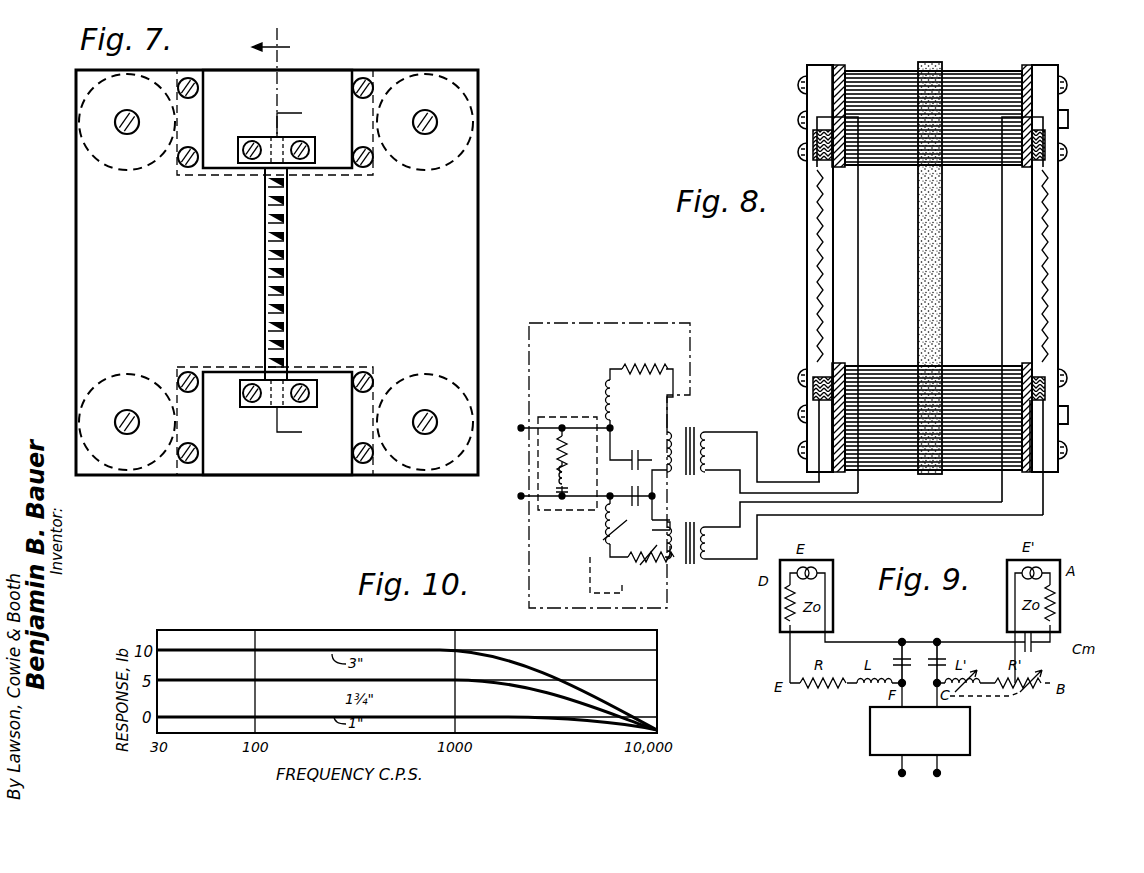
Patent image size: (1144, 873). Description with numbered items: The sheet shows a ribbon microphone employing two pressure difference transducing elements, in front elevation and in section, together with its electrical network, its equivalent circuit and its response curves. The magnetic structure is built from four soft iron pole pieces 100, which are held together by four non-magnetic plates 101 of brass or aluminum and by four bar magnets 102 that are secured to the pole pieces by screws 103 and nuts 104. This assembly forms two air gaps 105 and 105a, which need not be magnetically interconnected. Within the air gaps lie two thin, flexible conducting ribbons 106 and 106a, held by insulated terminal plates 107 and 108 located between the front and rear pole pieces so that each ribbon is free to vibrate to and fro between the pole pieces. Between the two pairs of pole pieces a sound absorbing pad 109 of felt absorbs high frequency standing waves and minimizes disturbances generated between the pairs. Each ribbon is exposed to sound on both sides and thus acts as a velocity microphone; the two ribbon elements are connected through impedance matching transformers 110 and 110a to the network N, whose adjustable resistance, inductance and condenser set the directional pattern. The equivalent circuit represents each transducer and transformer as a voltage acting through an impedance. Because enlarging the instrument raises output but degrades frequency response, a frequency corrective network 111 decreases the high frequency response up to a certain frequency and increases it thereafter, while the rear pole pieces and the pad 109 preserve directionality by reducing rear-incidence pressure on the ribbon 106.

In FIG. 7, the soft iron pole piece 100 is at (76, 292).
In FIG. 8, the soft iron pole piece 100 is at (807, 290).
In FIG. 7, the non-magnetic plate 101 is at (332, 70).
In FIG. 8, the non-magnetic plate 101 is at (840, 66).
In FIG. 8, the bar magnet 102 is at (960, 70).
In FIG. 8, the screw 103 is at (800, 122).
In FIG. 8, the nut 104 is at (1070, 118).
In FIG. 7, the air gap 105 is at (266, 265).
In FIG. 8, the air gap 105 is at (812, 312).
In FIG. 8, the air gap 105a is at (1040, 292).
In FIG. 7, the conducting ribbon 106 is at (289, 280).
In FIG. 8, the conducting ribbon 106 is at (818, 230).
In FIG. 8, the conducting ribbon 106a is at (1048, 238).
In FIG. 7, the insulated terminal plate 107 is at (297, 137).
In FIG. 7, the insulated terminal plate 108 is at (302, 408).
In FIG. 8, the sound absorbing pad 109 is at (944, 275).
In FIG. 8, the impedance matching transformer 110 is at (732, 425).
In FIG. 8, the impedance matching transformer 110a is at (815, 544).
In FIG. 8, the frequency corrective network 111 is at (560, 417).
In FIG. 9, the frequency corrective network 111 is at (970, 733).